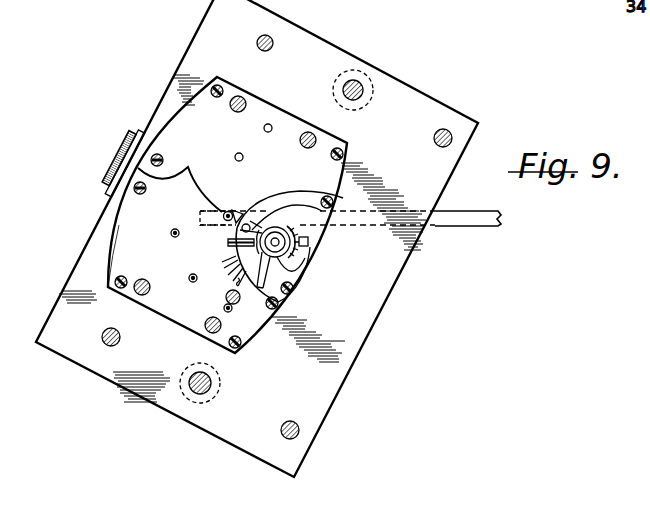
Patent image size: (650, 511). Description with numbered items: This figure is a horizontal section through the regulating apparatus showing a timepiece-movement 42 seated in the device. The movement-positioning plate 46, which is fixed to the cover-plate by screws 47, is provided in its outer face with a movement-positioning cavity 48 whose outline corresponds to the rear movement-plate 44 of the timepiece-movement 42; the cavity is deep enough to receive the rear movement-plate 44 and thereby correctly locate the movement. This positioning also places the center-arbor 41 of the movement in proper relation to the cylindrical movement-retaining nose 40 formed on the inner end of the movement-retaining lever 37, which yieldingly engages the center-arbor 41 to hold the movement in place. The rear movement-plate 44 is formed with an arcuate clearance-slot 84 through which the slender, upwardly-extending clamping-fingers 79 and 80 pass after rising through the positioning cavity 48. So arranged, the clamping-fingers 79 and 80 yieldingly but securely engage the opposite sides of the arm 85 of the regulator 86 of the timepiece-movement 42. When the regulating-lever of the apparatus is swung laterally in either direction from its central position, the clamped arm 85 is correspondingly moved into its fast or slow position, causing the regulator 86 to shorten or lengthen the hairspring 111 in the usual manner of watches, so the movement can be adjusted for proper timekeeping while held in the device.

The movement-retaining lever 37 is at (478, 227).
The movement-retaining nose 40 is at (200, 216).
The center-arbor 41 is at (228, 211).
The timepiece-movement 42 is at (114, 232).
The rear movement-plate 44 is at (153, 315).
The movement-positioning plate 46 is at (60, 293).
The screws 47 is at (356, 100).
The movement-positioning cavity 48 is at (108, 267).
The regulator-arm clamping-finger 79 is at (236, 257).
The regulator-arm clamping-finger 80 is at (247, 225).
The arcuate clearance-slot 84 is at (272, 203).
The regulator arm 85 is at (229, 243).
The regulator 86 is at (259, 289).
The hairspring 111 is at (302, 262).